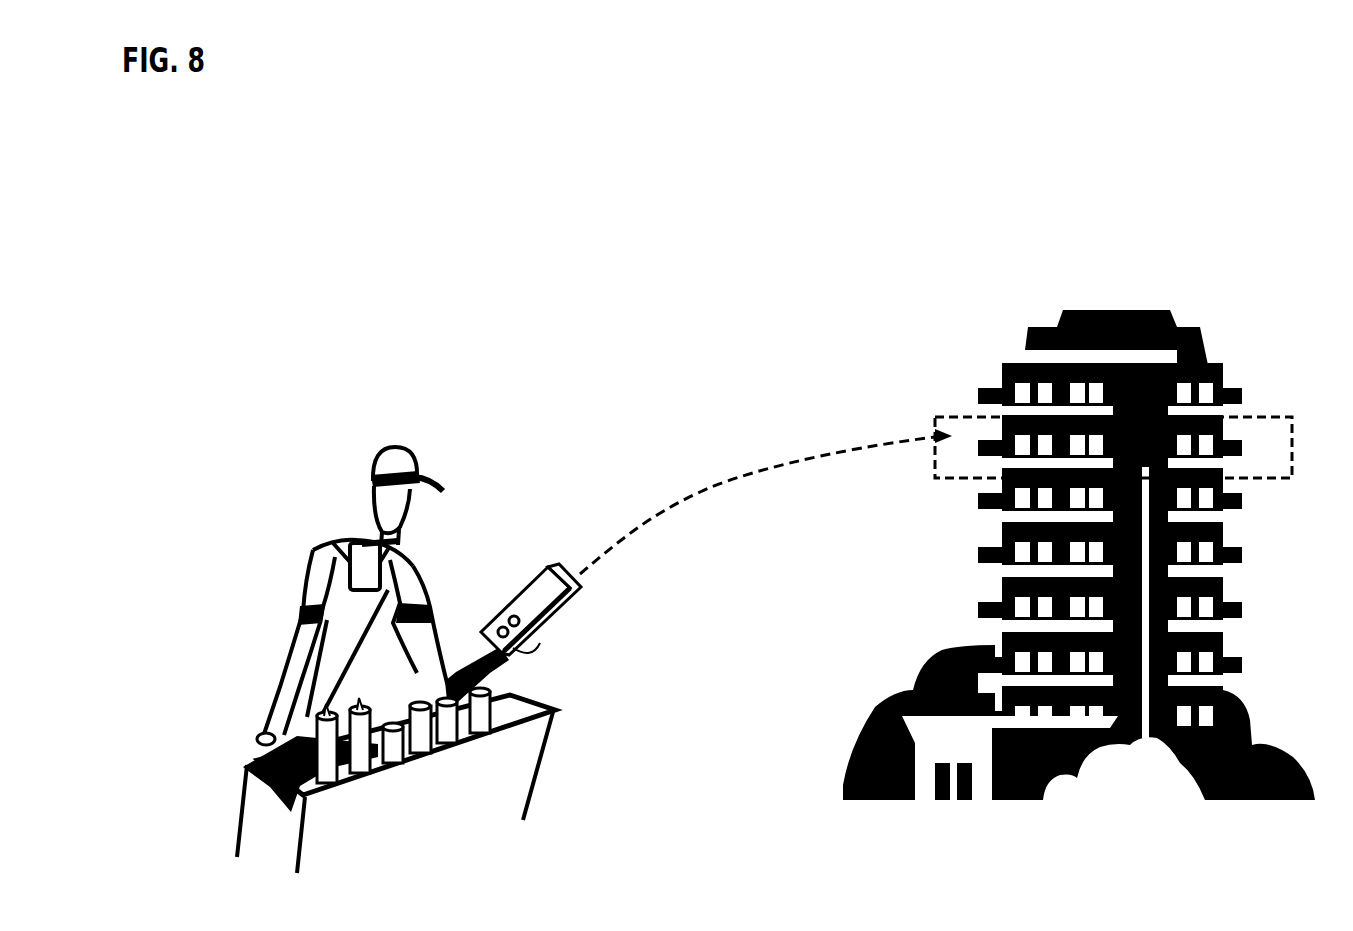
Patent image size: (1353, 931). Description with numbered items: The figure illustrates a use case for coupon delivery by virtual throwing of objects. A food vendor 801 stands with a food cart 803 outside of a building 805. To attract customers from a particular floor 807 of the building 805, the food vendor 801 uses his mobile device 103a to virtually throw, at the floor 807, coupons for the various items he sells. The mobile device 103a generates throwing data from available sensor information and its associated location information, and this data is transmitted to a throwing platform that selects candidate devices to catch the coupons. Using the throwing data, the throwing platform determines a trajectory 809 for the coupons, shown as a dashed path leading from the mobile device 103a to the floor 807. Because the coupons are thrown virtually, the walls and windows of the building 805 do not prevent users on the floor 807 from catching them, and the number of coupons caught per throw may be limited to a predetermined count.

The food vendor 801 is at (403, 447).
The food cart 803 is at (243, 770).
The mobile device 103a is at (548, 567).
The building 805 is at (1103, 310).
The floor 807 is at (953, 417).
The trajectory 809 is at (728, 488).